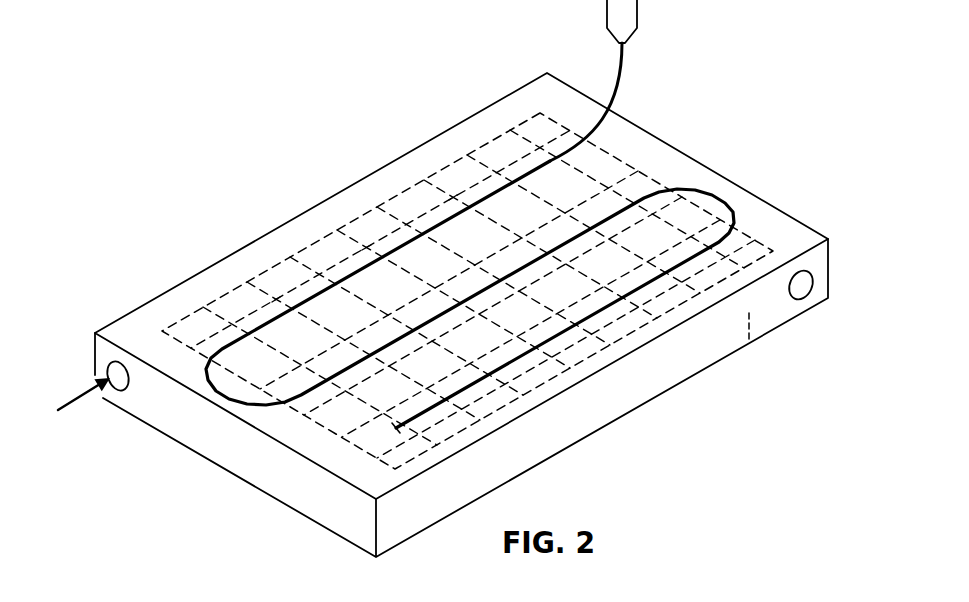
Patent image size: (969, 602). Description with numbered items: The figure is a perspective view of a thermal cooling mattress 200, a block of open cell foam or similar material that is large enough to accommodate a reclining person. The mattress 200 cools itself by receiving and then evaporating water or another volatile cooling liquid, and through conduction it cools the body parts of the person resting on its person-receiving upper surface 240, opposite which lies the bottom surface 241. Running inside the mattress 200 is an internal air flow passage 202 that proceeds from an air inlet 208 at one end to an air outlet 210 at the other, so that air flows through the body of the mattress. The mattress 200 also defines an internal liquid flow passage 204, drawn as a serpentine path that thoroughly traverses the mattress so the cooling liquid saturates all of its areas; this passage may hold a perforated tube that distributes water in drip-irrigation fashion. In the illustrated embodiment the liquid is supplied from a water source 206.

The cooling mattress 200 is at (454, 315).
The internal air flow passage 202 is at (382, 204).
The internal liquid flow passage 204 is at (228, 399).
The water source 206 is at (607, 10).
The air inlet 208 is at (110, 370).
The air outlet 210 is at (803, 292).
The person-receiving upper surface 240 is at (750, 213).
The bottom surface 241 is at (749, 344).